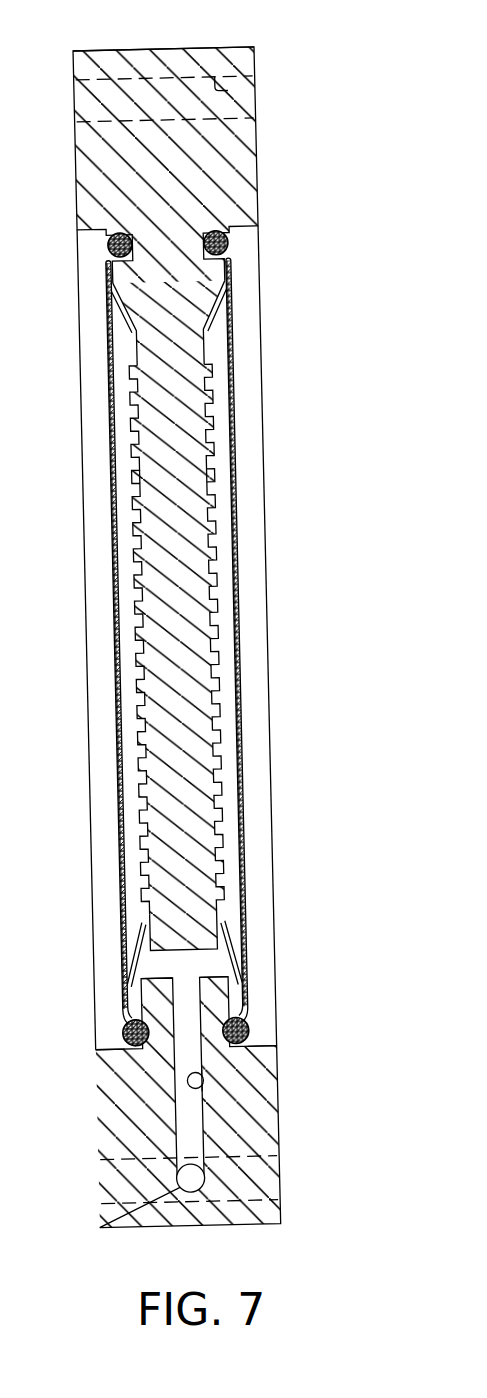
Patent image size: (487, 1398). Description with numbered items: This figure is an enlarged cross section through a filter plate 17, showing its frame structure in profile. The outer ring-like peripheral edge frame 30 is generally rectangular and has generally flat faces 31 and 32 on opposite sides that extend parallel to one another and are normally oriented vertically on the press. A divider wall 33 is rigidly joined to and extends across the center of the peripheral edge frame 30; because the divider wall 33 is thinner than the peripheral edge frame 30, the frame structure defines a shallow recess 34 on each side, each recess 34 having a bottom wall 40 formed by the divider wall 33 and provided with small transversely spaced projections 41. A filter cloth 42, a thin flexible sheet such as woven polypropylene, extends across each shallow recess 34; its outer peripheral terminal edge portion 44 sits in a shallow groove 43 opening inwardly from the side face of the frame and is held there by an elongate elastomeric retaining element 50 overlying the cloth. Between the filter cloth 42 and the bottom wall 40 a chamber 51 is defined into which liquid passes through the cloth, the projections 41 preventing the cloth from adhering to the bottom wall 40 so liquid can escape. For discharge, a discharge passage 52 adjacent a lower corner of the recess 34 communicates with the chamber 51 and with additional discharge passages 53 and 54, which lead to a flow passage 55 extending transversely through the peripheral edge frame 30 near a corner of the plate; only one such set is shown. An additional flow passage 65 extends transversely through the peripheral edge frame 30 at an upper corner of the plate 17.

The filter plate 17 is at (147, 8).
The peripheral edge frame 30 is at (231, 176).
The flat face 31 is at (76, 533).
The flat face 32 is at (275, 542).
The divider wall 33 is at (178, 450).
The shallow recess 34 is at (122, 362).
The bottom wall 40 is at (218, 402).
The projections 41 is at (135, 470).
The filter cloth 42 is at (238, 655).
The shallow groove 43 is at (127, 1058).
The outer peripheral terminal edge portion 44 is at (127, 1030).
The elastomeric retaining element 50 is at (105, 250).
The chamber 51 is at (128, 620).
The discharge passage 52 is at (188, 958).
The additional discharge passage 53 is at (205, 1086).
The additional discharge passage 54 is at (203, 1172).
The flow passage 55 is at (273, 1187).
The flow passage 65 is at (253, 78).